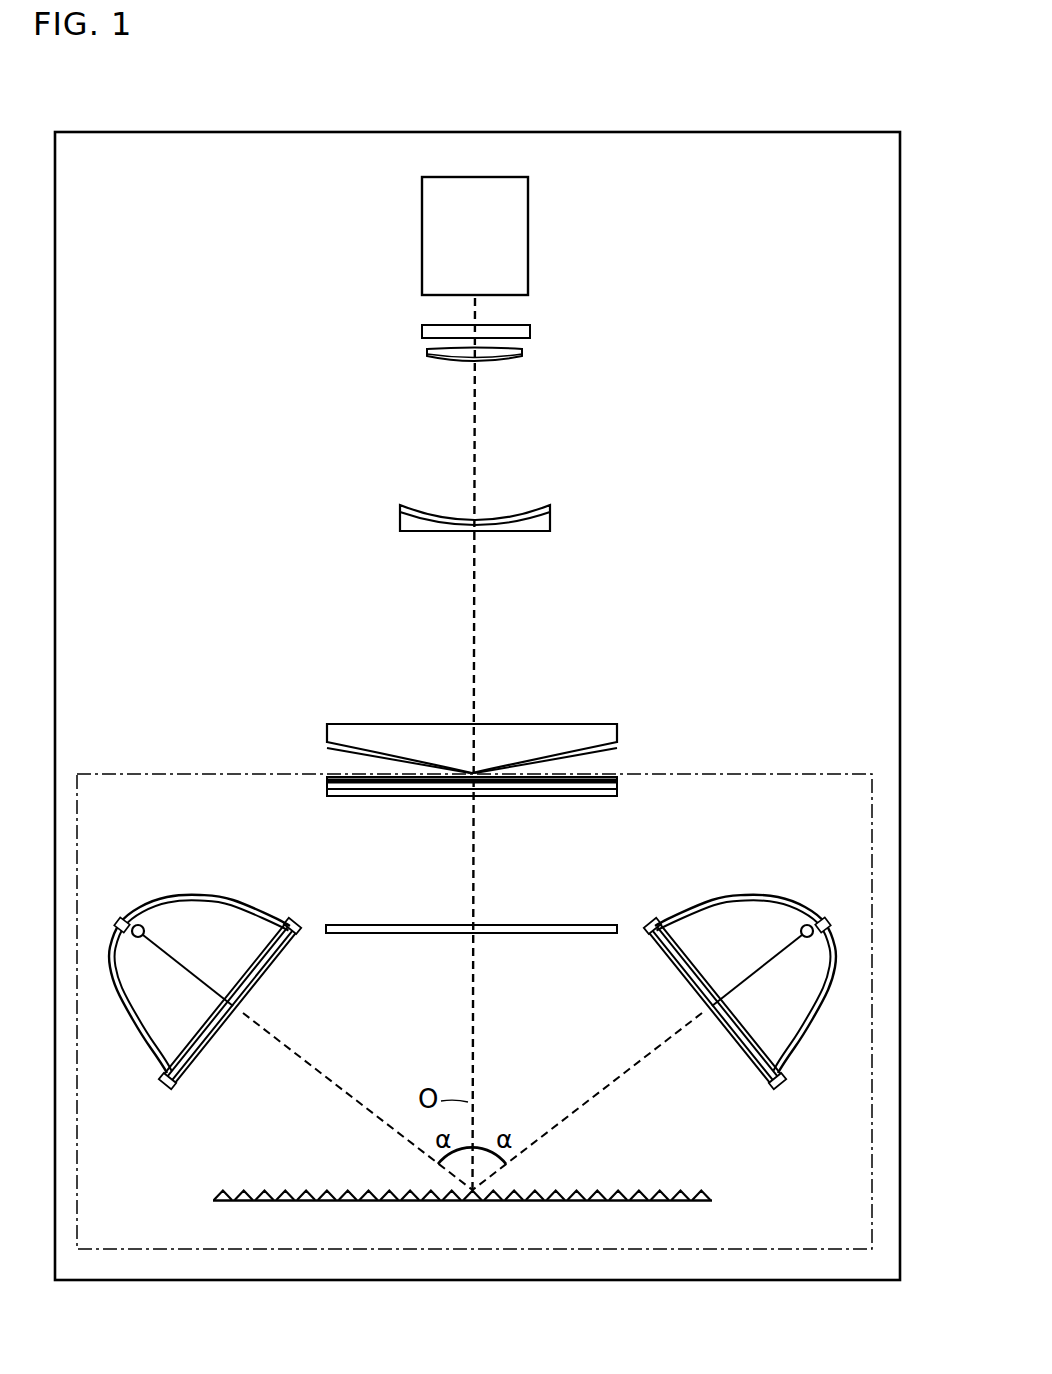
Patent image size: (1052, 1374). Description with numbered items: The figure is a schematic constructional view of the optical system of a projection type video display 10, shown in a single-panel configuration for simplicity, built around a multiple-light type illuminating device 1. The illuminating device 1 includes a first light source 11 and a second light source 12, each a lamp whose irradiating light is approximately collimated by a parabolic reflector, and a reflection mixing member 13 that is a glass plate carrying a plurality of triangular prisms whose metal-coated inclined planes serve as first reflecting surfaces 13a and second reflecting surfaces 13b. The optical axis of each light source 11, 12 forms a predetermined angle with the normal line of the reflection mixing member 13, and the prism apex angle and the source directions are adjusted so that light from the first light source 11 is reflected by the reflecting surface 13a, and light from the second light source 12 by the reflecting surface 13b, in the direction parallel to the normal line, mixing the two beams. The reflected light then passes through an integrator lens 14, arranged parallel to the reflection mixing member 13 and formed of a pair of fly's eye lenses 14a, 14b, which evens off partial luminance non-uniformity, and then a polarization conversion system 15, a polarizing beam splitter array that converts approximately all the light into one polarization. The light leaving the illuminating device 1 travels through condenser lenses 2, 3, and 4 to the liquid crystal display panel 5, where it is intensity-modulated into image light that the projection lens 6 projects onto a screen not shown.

The multiple-light type illuminating device 1 is at (236, 771).
The condenser lens 2 is at (610, 734).
The condenser lens 3 is at (546, 521).
The condenser lens 4 is at (523, 354).
The liquid crystal display panel 5 is at (531, 332).
The projection lens 6 is at (529, 238).
The projection type video display 10 is at (893, 621).
The first light source 11 is at (177, 896).
The second light source 12 is at (776, 895).
The reflection mixing member 13 is at (503, 1178).
The first reflecting surface 13a is at (322, 1196).
The second reflecting surface 13b is at (332, 1190).
The integrator lens 14 is at (422, 855).
The fly's eye lens 14a is at (328, 924).
The fly's eye lens 14b is at (327, 781).
The polarization conversion system 15 is at (617, 783).